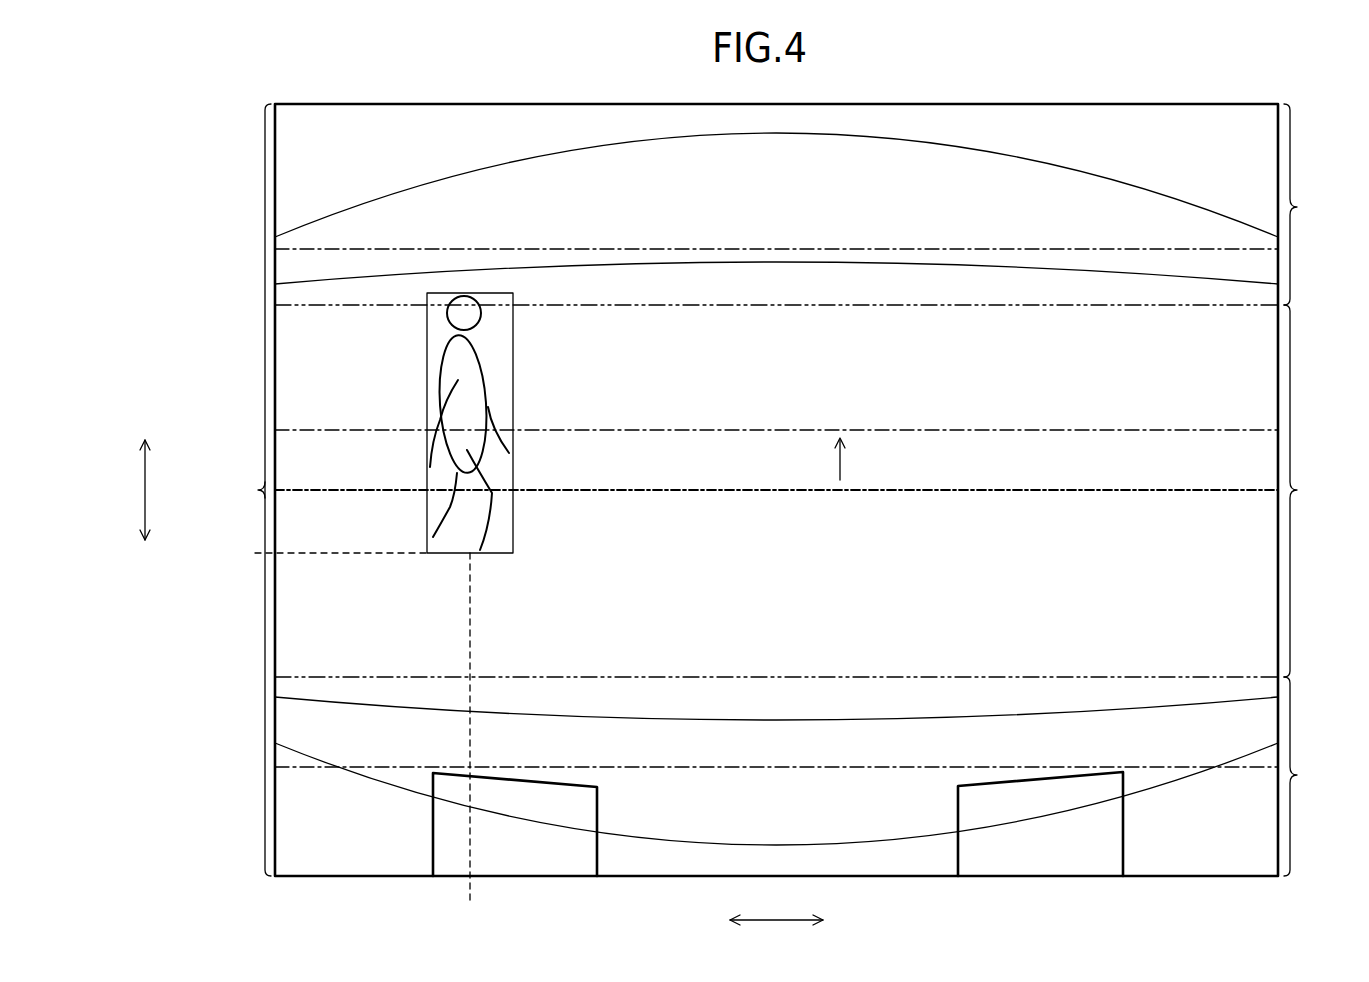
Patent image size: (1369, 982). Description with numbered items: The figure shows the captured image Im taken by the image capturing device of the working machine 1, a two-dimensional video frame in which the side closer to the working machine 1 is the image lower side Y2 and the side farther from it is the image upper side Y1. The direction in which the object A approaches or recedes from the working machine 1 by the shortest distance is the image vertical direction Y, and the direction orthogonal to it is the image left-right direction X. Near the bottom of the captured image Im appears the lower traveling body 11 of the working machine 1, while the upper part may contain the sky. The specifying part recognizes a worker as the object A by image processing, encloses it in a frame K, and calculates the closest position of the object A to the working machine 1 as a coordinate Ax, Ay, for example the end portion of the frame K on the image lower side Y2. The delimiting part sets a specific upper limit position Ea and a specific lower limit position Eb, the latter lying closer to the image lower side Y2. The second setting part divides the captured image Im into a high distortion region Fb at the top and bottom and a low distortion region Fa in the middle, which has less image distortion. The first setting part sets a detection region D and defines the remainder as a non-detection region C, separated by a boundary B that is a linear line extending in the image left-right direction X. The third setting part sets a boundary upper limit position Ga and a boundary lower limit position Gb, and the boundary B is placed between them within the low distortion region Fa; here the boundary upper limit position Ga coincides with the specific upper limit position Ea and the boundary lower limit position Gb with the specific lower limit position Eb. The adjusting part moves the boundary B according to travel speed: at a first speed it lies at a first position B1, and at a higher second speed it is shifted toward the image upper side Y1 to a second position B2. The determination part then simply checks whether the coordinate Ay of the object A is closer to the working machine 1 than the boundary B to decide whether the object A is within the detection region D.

The captured image Im is at (251, 96).
The non-detection region C is at (265, 297).
The detection region D is at (265, 669).
The low distortion region Fa is at (1305, 491).
The high distortion region Fb is at (1307, 490).
The specific upper limit position Ea is at (776, 230).
The boundary upper limit position Ga is at (887, 249).
The specific lower limit position Eb is at (776, 747).
The boundary lower limit position Gb is at (889, 767).
The boundary B is at (776, 441).
The first position B1 is at (889, 490).
The second position B2 is at (889, 430).
The object A is at (453, 368).
The frame K is at (513, 367).
The coordinate in image vertical direction Ay is at (327, 557).
The coordinate in image left-right direction Ax is at (474, 745).
The lower traveling body 11 is at (778, 855).
The working machine 1 is at (543, 867).
The image left-right direction X is at (776, 933).
The image vertical direction Y is at (154, 490).
The image upper side Y1 is at (147, 420).
The image lower side Y2 is at (147, 565).